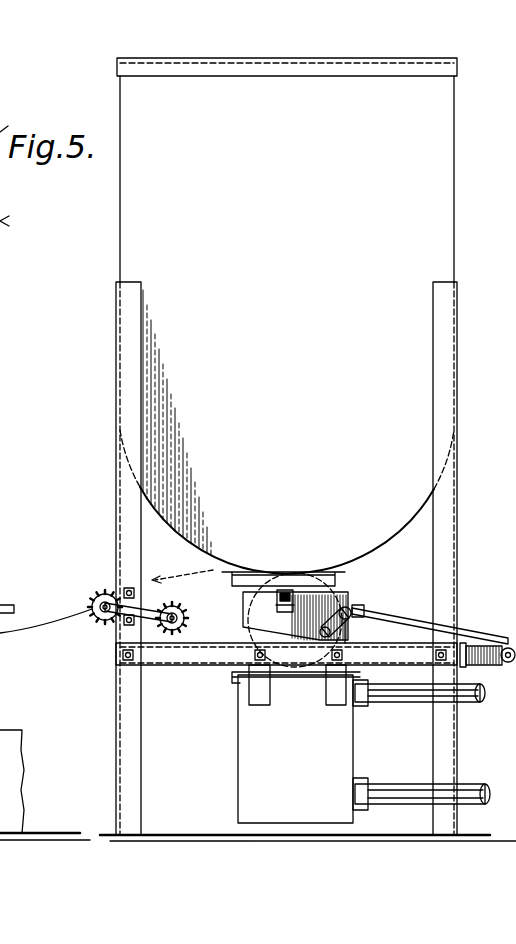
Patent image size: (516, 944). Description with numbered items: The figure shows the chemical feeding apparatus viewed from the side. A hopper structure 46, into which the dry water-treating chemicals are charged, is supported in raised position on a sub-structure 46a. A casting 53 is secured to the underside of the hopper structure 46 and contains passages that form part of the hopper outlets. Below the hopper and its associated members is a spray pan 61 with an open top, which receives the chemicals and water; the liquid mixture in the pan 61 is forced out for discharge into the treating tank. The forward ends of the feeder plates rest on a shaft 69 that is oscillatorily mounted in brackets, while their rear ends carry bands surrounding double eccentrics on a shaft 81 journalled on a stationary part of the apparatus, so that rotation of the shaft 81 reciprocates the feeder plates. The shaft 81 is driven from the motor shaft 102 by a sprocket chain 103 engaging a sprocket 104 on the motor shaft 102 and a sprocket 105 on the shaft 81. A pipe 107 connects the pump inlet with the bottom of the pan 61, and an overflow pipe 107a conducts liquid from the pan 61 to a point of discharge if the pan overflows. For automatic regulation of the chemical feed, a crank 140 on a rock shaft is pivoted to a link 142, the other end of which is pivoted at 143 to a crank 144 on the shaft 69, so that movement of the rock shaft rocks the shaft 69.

The hopper structure 46 is at (290, 289).
The sub-structure 46a is at (440, 395).
The casting 53 is at (318, 575).
The spray pan 61 is at (296, 744).
The shaft 69 is at (314, 643).
The shaft 81 is at (46, 619).
The motor shaft 102 is at (15, 582).
The sprocket chain 103 is at (168, 609).
The sprocket 104 is at (300, 548).
The sprocket 105 is at (99, 592).
The pipe 107 is at (392, 790).
The overflow pipe 107a is at (396, 703).
The crank 140 is at (500, 642).
The link 142 is at (402, 622).
The pivot 143 is at (355, 607).
The crank 144 is at (373, 632).